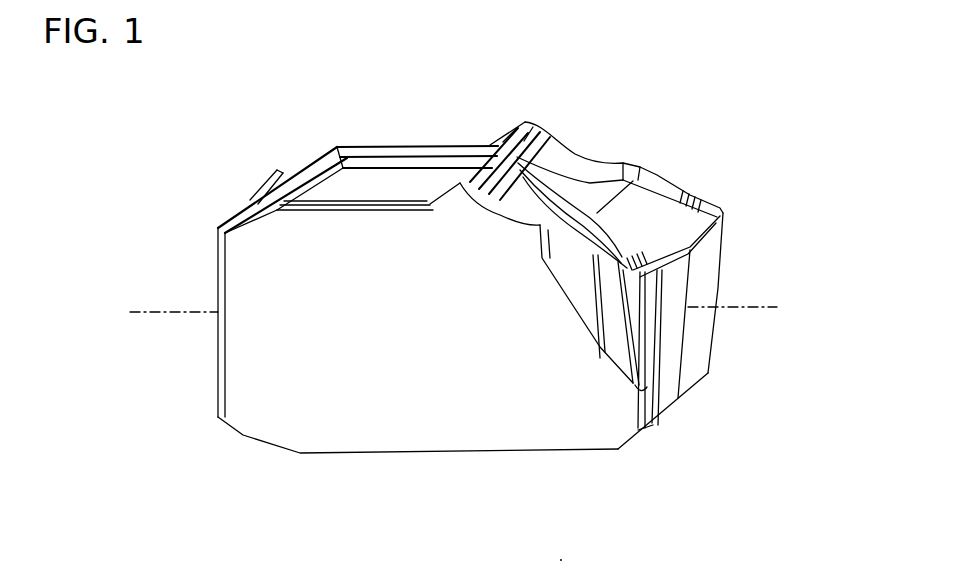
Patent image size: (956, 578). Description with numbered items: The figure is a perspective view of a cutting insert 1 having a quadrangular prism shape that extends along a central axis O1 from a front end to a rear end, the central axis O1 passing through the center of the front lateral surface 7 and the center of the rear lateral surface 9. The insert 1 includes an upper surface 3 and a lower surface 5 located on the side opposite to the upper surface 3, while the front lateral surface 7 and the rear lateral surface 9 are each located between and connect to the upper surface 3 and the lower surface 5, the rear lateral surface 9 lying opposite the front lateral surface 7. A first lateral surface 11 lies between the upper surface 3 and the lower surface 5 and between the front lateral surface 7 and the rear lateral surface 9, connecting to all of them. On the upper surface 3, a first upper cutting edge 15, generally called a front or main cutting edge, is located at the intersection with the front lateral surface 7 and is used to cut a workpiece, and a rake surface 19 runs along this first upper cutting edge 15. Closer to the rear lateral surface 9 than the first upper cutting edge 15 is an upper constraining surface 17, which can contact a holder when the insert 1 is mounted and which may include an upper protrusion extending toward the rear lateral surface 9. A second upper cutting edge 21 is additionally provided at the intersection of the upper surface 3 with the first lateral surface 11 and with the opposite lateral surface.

The insert 1 is at (272, 120).
The upper surface 3 is at (523, 120).
The lower surface 5 is at (345, 455).
The front lateral surface 7 is at (668, 340).
The rear lateral surface 9 is at (218, 358).
The first lateral surface 11 is at (477, 402).
The first upper cutting edge 15 is at (697, 245).
The upper constraining surface 17 is at (407, 157).
The rake surface 19 is at (678, 230).
The second upper cutting edge 21 is at (700, 208).
The central axis O1 is at (457, 311).